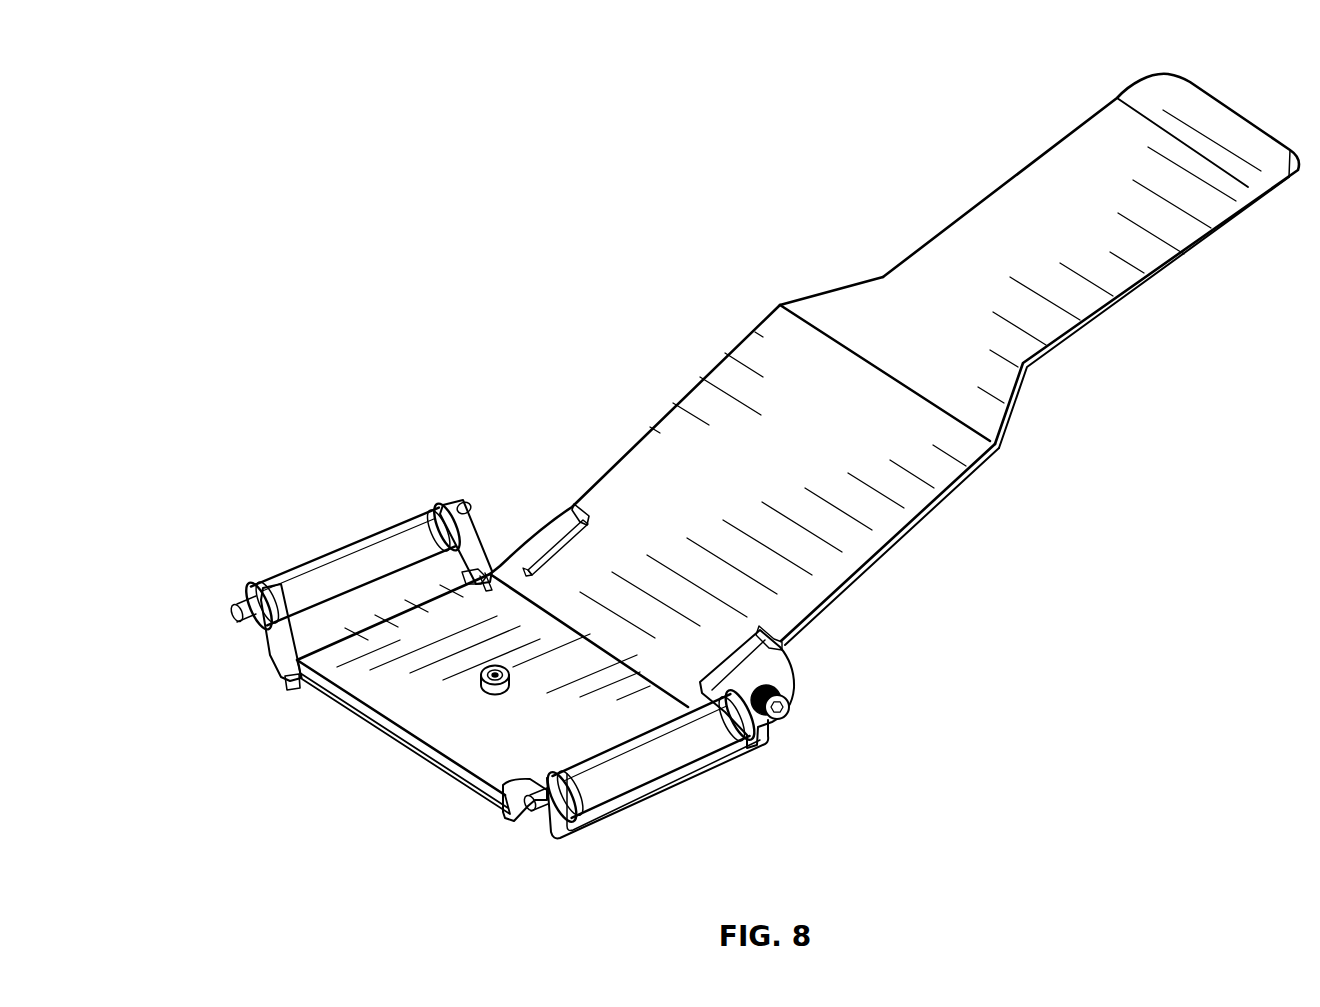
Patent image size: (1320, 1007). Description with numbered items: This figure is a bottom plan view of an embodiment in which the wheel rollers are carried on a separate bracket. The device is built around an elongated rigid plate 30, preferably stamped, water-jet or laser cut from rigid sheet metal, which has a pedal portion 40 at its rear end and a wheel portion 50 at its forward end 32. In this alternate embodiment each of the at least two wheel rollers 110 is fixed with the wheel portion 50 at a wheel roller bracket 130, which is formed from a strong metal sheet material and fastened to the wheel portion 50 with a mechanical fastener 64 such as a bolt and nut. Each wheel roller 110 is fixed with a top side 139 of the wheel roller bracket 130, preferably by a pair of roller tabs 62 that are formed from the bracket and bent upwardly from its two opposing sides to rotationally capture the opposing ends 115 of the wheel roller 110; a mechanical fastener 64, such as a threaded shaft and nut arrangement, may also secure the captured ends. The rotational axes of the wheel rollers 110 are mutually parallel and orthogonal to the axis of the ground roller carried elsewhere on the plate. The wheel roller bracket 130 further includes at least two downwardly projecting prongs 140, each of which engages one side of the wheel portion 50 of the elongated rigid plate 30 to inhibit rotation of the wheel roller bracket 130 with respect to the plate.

The elongated rigid plate 30 is at (808, 403).
The pedal portion 40 is at (1167, 100).
The forward end 32 is at (473, 694).
The wheel portion 50 is at (437, 772).
The roller tabs 62 is at (445, 507).
The mechanical fastener 64 is at (493, 697).
The wheel rollers 110 is at (397, 537).
The opposing ends 115 is at (255, 588).
The wheel roller bracket 130 is at (589, 637).
The top side 139 is at (560, 637).
The downwardly projecting prongs 140 is at (580, 506).